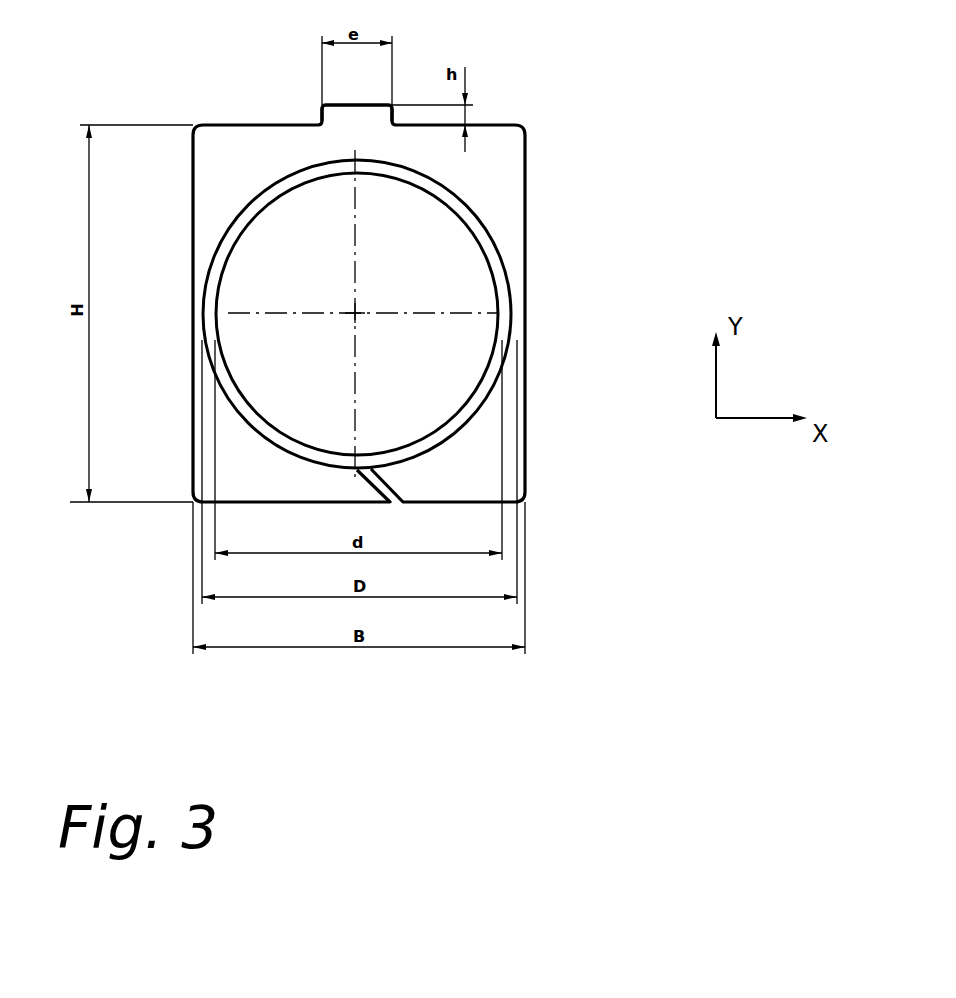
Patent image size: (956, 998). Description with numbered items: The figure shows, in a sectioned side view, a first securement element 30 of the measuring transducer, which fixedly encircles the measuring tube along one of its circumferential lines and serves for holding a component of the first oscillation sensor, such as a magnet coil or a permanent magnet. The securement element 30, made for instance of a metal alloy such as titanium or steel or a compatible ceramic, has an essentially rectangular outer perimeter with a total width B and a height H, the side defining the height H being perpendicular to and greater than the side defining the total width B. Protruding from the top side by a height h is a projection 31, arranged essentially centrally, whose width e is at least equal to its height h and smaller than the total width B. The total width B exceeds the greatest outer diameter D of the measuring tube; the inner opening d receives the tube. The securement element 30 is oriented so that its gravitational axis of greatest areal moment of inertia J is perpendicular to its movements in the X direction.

The first securement element 30 is at (488, 180).
The projection 31 is at (303, 104).
The inner bore diameter d is at (468, 320).